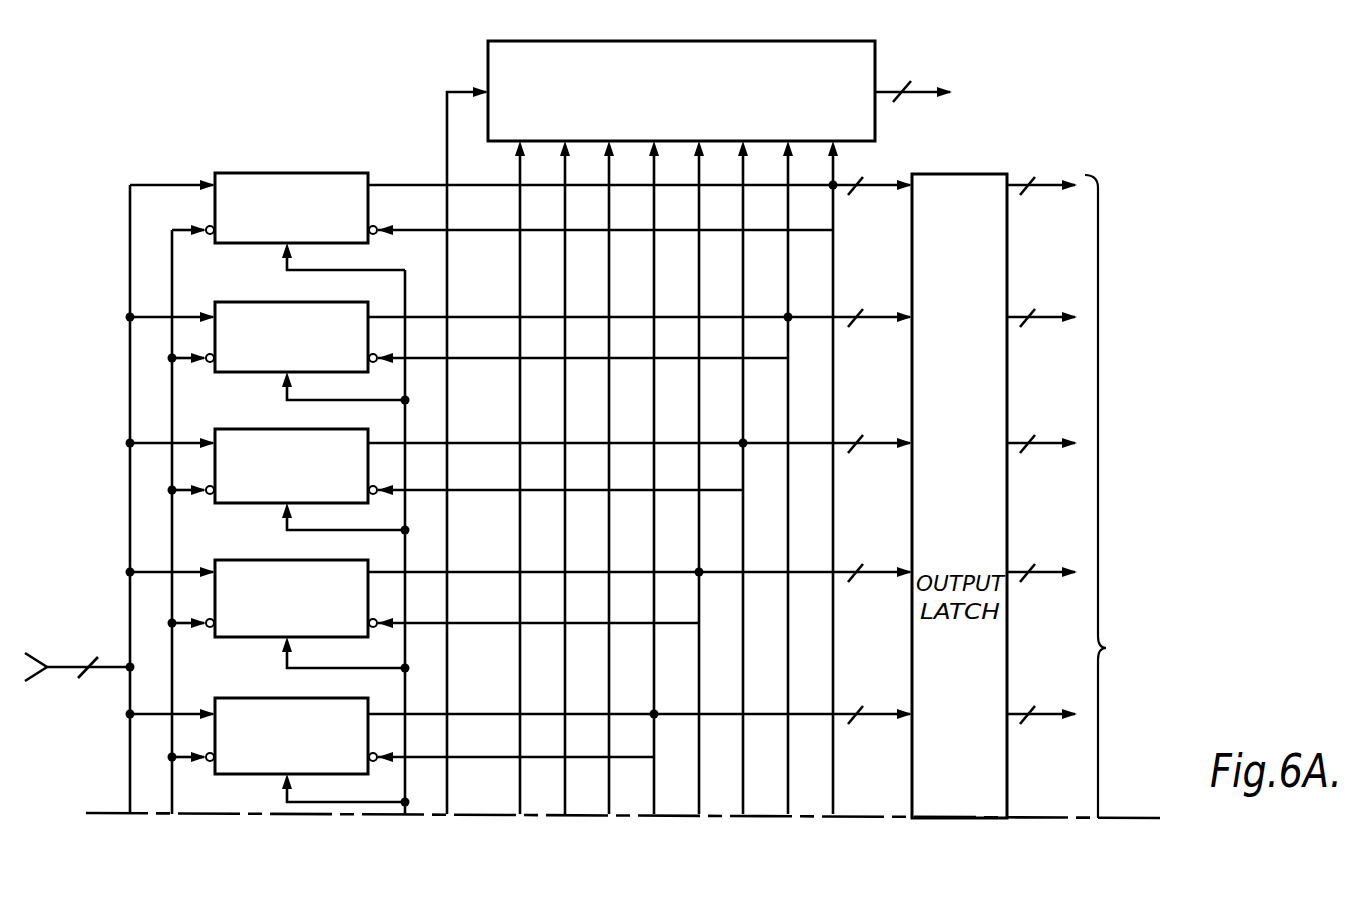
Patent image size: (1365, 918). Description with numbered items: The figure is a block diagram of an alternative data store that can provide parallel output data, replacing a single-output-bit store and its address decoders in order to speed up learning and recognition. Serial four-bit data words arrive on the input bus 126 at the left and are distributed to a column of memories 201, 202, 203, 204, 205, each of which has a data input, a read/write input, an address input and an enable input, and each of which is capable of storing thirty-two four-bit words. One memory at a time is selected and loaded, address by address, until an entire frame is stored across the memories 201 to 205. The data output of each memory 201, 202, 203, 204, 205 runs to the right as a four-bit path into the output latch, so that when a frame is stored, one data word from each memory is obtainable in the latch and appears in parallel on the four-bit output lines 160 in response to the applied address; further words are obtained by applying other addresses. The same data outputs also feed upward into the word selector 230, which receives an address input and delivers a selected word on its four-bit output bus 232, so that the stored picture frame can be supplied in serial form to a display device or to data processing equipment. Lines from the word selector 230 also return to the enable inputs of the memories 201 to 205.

The 4-bit input data bus 126 is at (72, 669).
The output lines of output latch 160 is at (1106, 645).
The memory 201 is at (263, 246).
The memory 202 is at (261, 375).
The memory 203 is at (258, 507).
The memory 204 is at (258, 641).
The memory 205 is at (260, 778).
The word selector 230 is at (498, 58).
The bus 232 is at (917, 99).